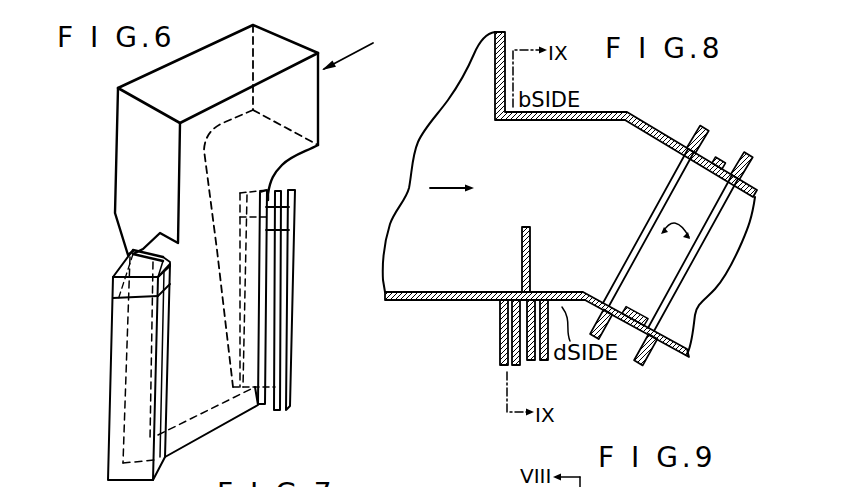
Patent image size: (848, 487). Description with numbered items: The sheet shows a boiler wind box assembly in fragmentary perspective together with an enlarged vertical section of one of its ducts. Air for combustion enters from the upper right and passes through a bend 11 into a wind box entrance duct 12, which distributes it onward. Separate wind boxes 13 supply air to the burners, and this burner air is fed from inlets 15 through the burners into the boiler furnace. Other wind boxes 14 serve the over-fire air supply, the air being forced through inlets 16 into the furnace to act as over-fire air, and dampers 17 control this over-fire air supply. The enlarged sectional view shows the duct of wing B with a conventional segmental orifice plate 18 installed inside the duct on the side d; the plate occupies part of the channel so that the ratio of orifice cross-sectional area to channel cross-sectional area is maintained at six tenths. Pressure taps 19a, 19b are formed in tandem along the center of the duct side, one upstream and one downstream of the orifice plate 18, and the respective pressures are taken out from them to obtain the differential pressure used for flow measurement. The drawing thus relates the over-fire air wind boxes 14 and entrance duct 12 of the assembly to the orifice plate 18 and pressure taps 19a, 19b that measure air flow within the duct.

In FIG. 6, the bend 11 is at (145, 83).
In FIG. 6, the wind box entrance duct 12 is at (208, 390).
In FIG. 6, the wind boxes 13 is at (293, 305).
In FIG. 6, the wind boxes 14 is at (117, 273).
In FIG. 8, the wind boxes 14 is at (590, 112).
In FIG. 6, the inlets 15 is at (282, 355).
In FIG. 6, the inlets 16 is at (288, 218).
In FIG. 8, the dampers 17 is at (662, 285).
In FIG. 8, the segmental orifice plate 18 is at (532, 250).
In FIG. 8, the pressure tap 19a is at (500, 357).
In FIG. 8, the pressure tap 19b is at (550, 358).